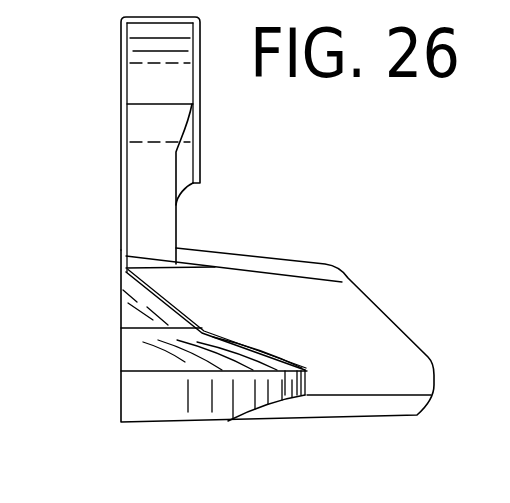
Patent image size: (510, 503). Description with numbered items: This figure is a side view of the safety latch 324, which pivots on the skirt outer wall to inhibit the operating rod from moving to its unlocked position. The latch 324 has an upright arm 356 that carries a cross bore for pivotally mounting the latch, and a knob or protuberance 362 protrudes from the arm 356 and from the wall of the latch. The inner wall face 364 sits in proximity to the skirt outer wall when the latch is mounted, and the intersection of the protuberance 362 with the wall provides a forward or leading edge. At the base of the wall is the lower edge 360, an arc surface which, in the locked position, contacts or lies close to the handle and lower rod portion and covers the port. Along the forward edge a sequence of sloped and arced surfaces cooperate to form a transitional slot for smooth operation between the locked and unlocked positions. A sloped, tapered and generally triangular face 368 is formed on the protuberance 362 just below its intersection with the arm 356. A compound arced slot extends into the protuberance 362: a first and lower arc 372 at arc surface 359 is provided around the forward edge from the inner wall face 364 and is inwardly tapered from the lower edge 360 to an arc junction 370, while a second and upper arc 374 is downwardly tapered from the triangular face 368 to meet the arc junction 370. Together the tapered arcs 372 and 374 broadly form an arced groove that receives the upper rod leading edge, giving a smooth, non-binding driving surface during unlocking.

The safety latch 324 is at (90, 227).
The upright arm 356 is at (141, 177).
The arc surface 359 is at (108, 334).
The lower edge 360 is at (228, 419).
The protuberance 362 is at (353, 307).
The inner wall face 364 is at (122, 271).
The triangular face 368 is at (137, 303).
The arc junction 370 is at (280, 368).
The first and lower arc 372 is at (147, 410).
The second and upper arc 374 is at (135, 356).